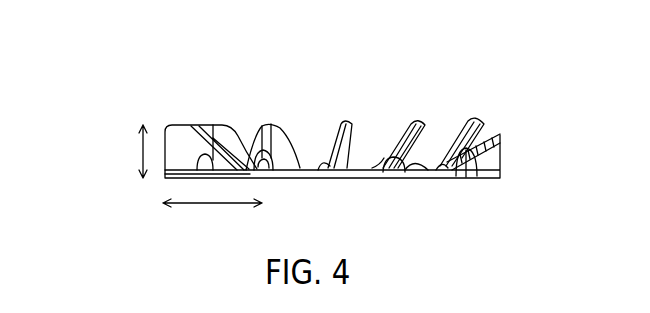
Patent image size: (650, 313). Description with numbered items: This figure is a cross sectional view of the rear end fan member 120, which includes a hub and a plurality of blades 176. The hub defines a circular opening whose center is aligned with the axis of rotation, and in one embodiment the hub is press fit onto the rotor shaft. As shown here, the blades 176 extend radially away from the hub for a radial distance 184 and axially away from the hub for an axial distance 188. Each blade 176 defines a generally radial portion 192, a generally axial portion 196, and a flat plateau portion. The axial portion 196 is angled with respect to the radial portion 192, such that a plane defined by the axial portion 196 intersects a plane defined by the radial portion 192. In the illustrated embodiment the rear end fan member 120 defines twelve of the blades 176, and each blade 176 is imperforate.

The rear end fan member 120 is at (318, 128).
The blade 176 is at (288, 128).
The radial distance 184 is at (208, 210).
The axial distance 188 is at (140, 157).
The radial portion 192 is at (168, 178).
The axial portion 196 is at (180, 148).